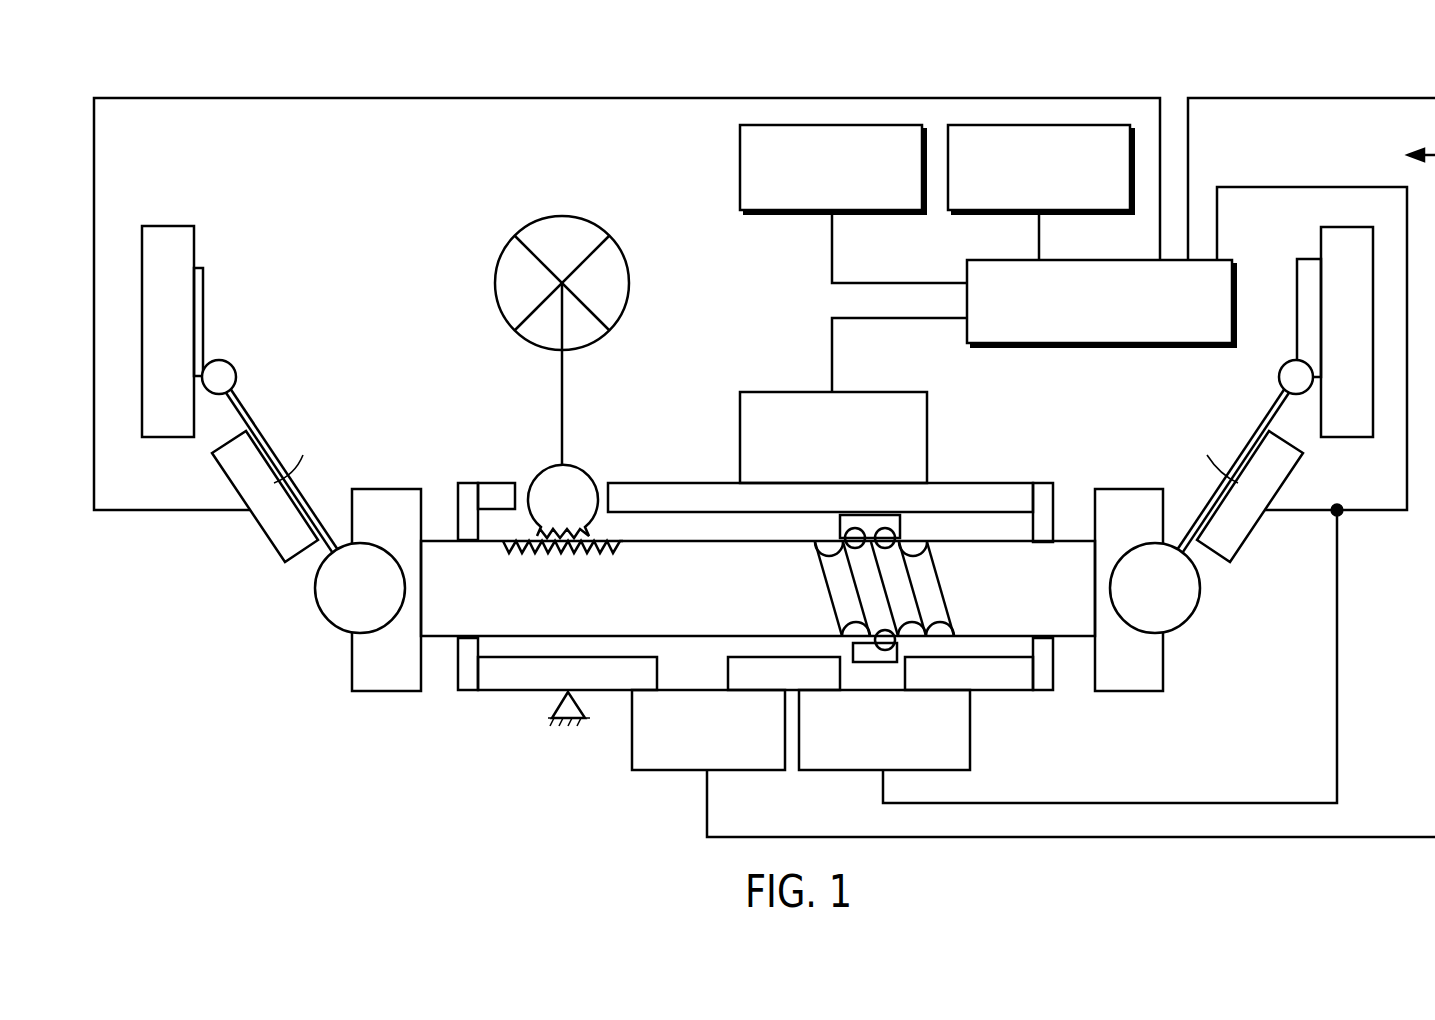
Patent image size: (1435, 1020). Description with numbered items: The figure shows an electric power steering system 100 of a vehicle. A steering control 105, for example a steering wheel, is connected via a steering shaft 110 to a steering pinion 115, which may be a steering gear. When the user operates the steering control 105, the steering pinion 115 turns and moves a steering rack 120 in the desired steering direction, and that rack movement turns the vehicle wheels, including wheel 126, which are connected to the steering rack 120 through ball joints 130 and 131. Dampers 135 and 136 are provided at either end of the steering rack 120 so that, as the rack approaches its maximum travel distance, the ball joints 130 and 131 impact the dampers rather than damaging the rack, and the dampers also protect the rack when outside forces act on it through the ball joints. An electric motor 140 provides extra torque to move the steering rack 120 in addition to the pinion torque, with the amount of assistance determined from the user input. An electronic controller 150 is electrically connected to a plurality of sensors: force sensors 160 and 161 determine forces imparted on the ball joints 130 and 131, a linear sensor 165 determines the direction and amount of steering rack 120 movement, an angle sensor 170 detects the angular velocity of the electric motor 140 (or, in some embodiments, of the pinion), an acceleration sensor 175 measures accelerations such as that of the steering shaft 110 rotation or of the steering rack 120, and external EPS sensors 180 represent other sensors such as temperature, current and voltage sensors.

The electric power steering system 100 is at (162, 54).
The steering control 105 is at (562, 216).
The steering shaft 110 is at (562, 377).
The steering pinion 115 is at (540, 476).
The steering rack 120 is at (692, 555).
The wheel 126 is at (1321, 240).
The ball joint 130 is at (315, 588).
The ball joint 131 is at (1185, 593).
The damper 135 is at (195, 236).
The damper 136 is at (1042, 692).
The electric motor 140 is at (832, 355).
The electronic controller 150 is at (1102, 345).
The force sensor 160 is at (262, 538).
The force sensor 161 is at (1248, 553).
The linear sensor 165 is at (650, 772).
The angle sensor 170 is at (832, 772).
The acceleration sensor 175 is at (832, 125).
The external EPS sensors 180 is at (1012, 125).